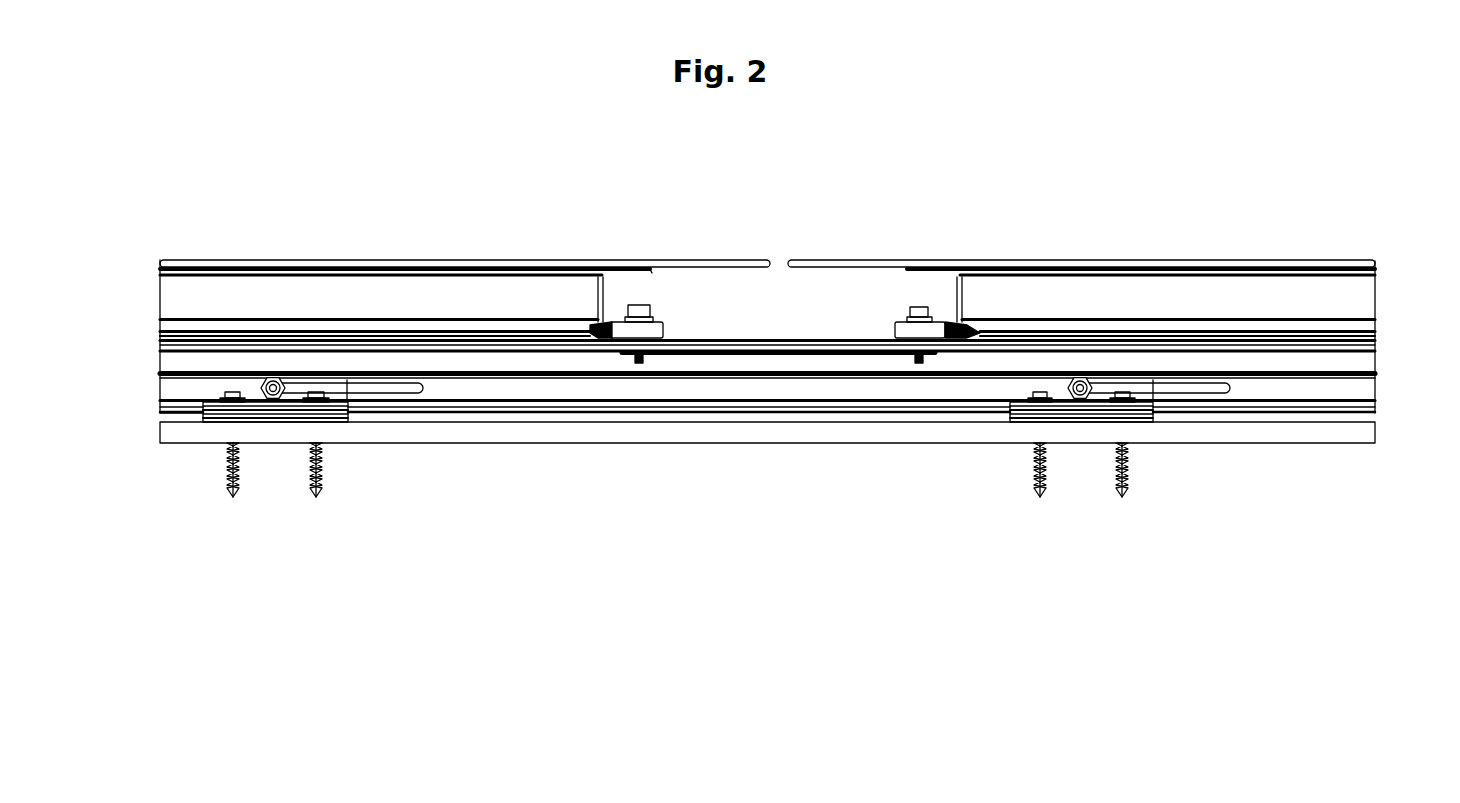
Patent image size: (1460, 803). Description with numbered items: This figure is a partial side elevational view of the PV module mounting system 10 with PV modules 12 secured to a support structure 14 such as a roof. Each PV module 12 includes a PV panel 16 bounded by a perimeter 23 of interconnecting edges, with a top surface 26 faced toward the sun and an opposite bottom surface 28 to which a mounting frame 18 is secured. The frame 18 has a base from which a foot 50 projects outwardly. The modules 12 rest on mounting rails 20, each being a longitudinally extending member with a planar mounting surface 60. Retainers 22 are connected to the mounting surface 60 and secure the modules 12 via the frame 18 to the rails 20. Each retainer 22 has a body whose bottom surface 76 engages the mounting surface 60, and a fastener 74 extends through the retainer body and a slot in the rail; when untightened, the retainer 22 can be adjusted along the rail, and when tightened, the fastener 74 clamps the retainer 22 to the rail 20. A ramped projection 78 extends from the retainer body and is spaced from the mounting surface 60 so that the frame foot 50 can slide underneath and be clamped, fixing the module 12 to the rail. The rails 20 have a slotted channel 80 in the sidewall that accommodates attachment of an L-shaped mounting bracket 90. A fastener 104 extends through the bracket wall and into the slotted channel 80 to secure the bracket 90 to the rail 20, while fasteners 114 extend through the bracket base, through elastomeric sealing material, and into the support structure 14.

The PV module mounting system 10 is at (534, 558).
The PV module 12 is at (262, 256).
The support structure 14 is at (180, 436).
The PV panel 16 is at (822, 261).
The mounting frame 18 is at (178, 306).
The mounting rail 20 is at (1280, 388).
The retainer 22 is at (638, 332).
The perimeter 23 is at (928, 330).
The top surface 26 is at (668, 259).
The bottom surface 28 is at (735, 267).
The foot 50 is at (597, 338).
The mounting surface 60 is at (783, 338).
The fastener 74 is at (920, 312).
The bottom surface 76 is at (655, 337).
The ramped projection 78 is at (590, 327).
The slotted channel 80 is at (1207, 389).
The mounting bracket 90 is at (350, 398).
The fastener 104 is at (1068, 385).
The fastener 114 is at (320, 500).